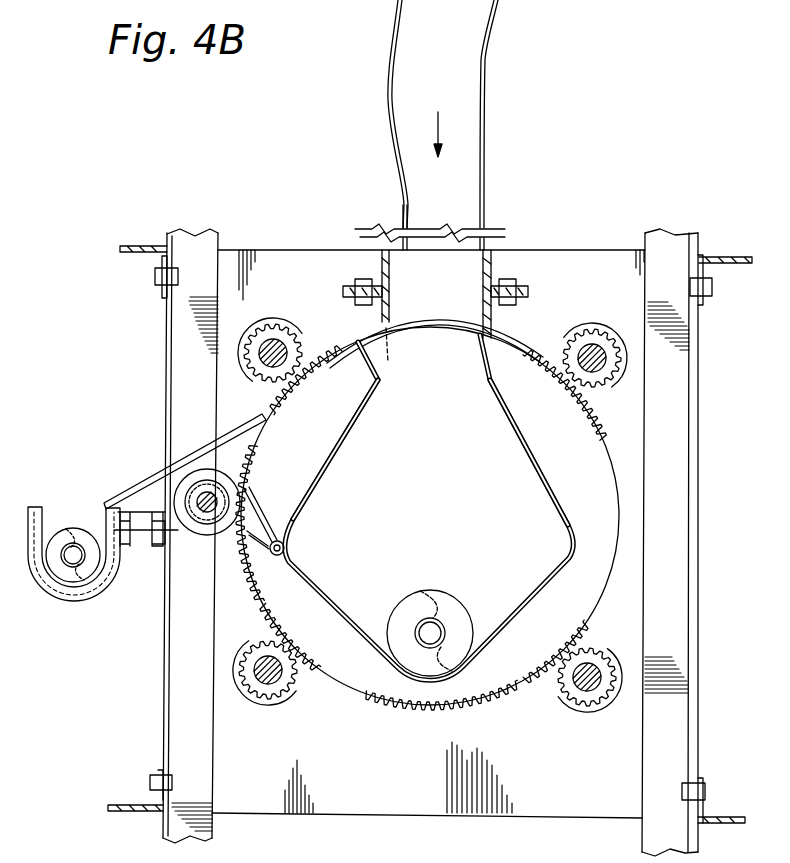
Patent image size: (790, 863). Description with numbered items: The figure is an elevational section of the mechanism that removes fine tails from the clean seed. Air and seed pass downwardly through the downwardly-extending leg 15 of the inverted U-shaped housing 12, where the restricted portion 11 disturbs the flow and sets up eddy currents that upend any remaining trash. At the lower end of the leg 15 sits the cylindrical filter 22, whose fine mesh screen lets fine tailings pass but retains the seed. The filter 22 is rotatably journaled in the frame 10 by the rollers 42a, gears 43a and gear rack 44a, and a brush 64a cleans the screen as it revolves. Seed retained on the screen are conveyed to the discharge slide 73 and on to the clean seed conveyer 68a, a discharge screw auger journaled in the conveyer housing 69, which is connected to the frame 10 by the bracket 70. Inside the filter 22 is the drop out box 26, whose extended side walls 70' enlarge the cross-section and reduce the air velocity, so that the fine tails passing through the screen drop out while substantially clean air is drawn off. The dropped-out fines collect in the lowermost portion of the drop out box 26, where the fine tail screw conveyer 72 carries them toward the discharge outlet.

The frame 10 is at (178, 328).
The restricted portion 11 is at (402, 206).
The housing 12 is at (465, 158).
The downwardly-extending leg 15 is at (492, 62).
The filter 22 is at (606, 410).
The drop out box 26 is at (438, 489).
The rollers 42a is at (284, 326).
The gears 43a is at (562, 341).
The gear rack 44a is at (541, 357).
The brush 64a is at (205, 533).
The clean seed conveyer 68a is at (84, 533).
The conveyer housing 69 is at (53, 592).
The bracket 70 is at (146, 553).
The extended side walls 70' is at (439, 512).
The fine tail screw conveyer 72 is at (452, 604).
The discharge slide 73 is at (200, 461).